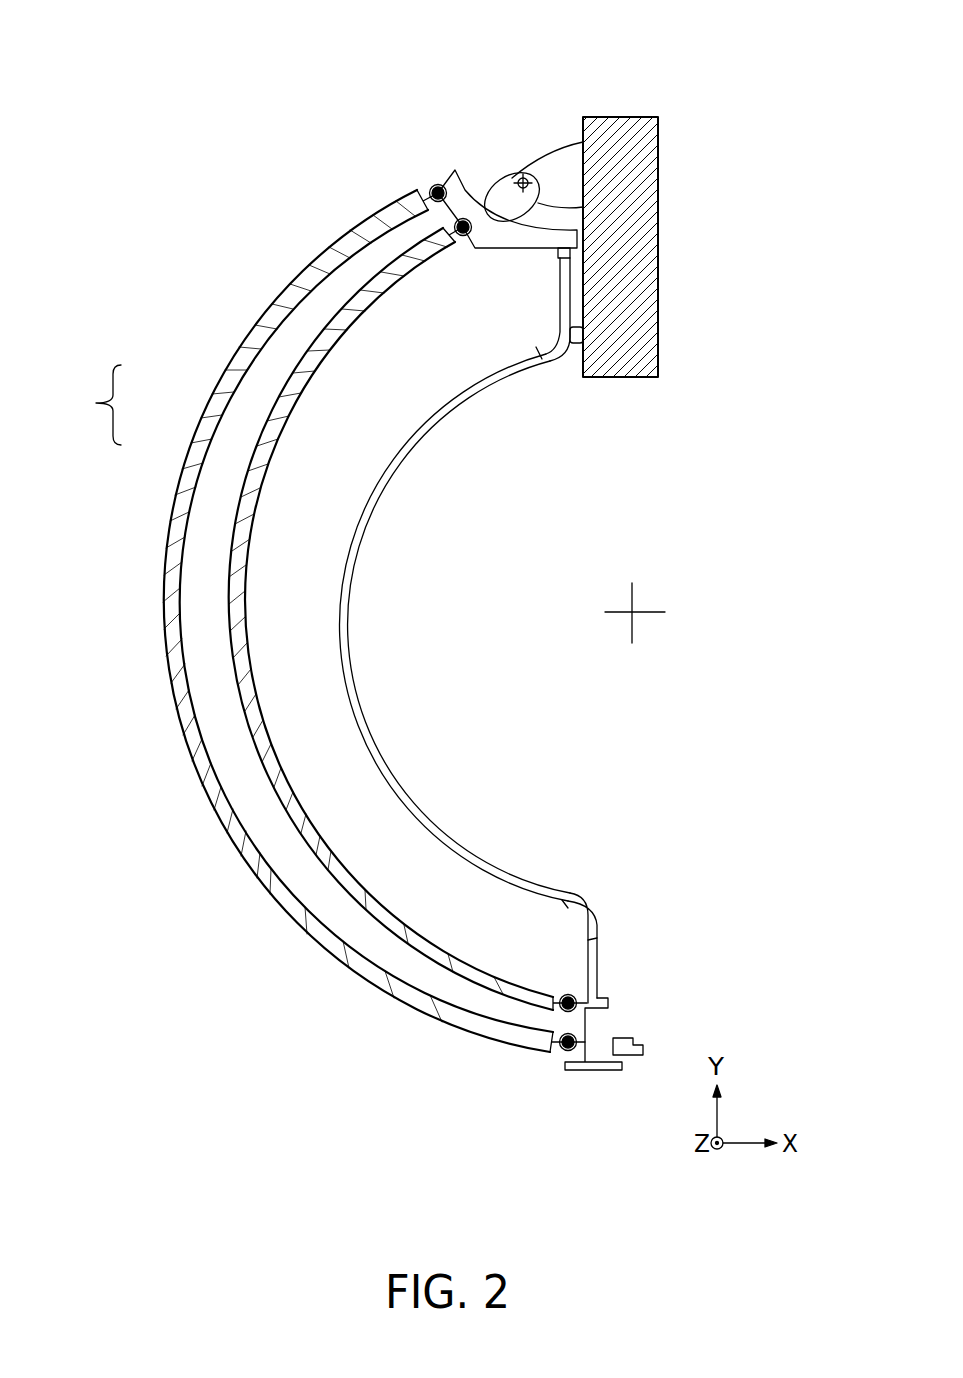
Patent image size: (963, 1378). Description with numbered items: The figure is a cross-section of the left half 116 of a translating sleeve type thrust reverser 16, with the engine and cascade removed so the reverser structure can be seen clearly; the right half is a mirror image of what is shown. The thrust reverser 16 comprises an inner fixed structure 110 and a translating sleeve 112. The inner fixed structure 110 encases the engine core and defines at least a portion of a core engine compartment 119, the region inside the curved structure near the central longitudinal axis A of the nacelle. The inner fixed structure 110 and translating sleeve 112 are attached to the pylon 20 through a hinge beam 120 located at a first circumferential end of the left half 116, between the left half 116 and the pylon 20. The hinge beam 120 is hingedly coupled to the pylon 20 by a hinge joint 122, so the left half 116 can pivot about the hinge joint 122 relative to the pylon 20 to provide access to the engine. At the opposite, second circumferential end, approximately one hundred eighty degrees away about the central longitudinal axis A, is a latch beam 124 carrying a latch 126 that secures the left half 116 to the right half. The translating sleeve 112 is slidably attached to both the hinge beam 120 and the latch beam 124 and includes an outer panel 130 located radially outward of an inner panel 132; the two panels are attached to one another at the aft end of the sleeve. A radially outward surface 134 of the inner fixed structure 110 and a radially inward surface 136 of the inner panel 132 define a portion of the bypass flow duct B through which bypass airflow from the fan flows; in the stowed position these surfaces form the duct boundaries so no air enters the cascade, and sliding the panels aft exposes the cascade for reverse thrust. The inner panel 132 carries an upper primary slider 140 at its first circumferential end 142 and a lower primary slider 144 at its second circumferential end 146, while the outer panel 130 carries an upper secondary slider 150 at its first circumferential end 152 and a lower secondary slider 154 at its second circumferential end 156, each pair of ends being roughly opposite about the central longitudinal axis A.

The thrust reverser 16 is at (114, 109).
The pylon 20 is at (635, 265).
The inner fixed structure 110 is at (373, 508).
The translating sleeve 112 is at (84, 405).
The left half 116 is at (287, 199).
The core engine compartment 119 is at (554, 628).
The hinge beam 120 is at (463, 190).
The hinge joint 122 is at (512, 177).
The latch beam 124 is at (577, 1062).
The latch 126 is at (627, 1040).
The outer panel 130 is at (216, 412).
The inner panel 132 is at (254, 467).
The radially outward surface 134 is at (412, 430).
The radially inward surface 136 is at (248, 597).
The upper primary slider 140 is at (474, 247).
The first circumferential end 142 is at (470, 252).
The lower primary slider 144 is at (573, 979).
The second circumferential end 146 is at (553, 993).
The upper secondary slider 150 is at (421, 171).
The first circumferential end 152 is at (418, 181).
The lower secondary slider 154 is at (562, 1064).
The second circumferential end 156 is at (553, 1066).
The central longitudinal axis A is at (636, 605).
The bypass flow duct B is at (443, 380).